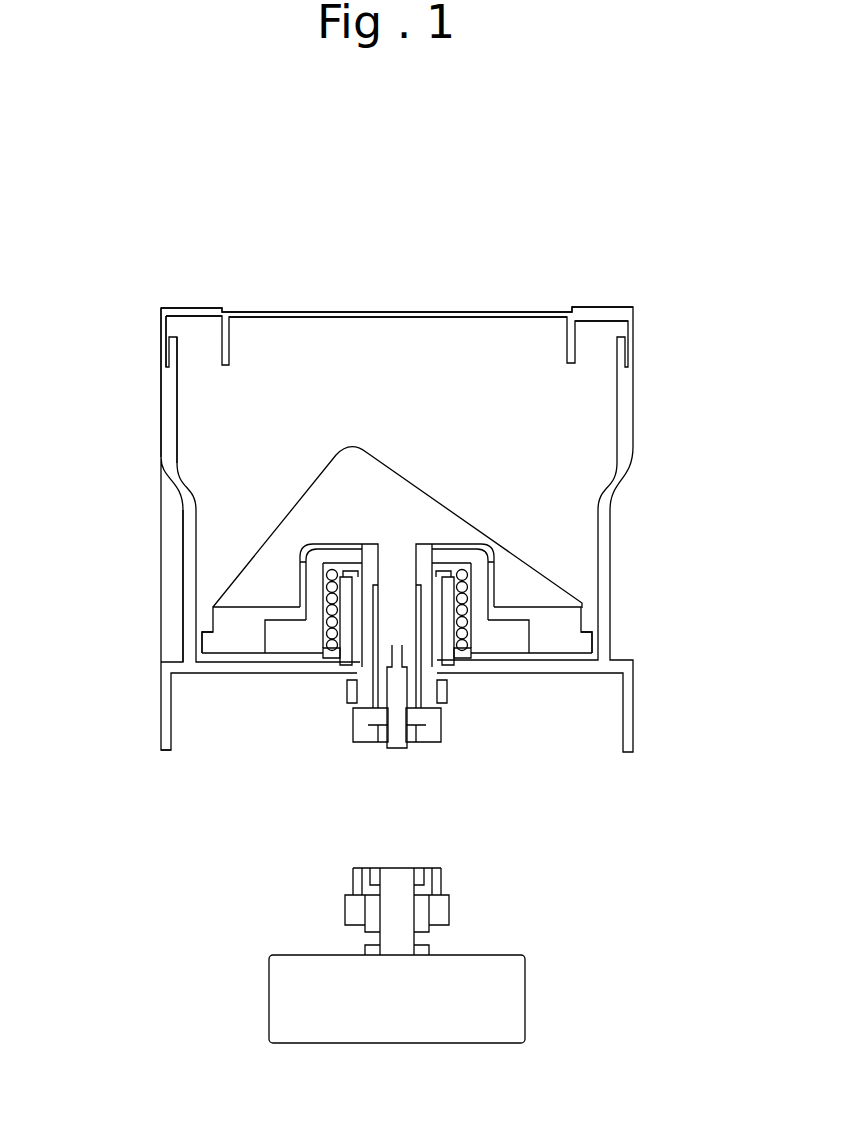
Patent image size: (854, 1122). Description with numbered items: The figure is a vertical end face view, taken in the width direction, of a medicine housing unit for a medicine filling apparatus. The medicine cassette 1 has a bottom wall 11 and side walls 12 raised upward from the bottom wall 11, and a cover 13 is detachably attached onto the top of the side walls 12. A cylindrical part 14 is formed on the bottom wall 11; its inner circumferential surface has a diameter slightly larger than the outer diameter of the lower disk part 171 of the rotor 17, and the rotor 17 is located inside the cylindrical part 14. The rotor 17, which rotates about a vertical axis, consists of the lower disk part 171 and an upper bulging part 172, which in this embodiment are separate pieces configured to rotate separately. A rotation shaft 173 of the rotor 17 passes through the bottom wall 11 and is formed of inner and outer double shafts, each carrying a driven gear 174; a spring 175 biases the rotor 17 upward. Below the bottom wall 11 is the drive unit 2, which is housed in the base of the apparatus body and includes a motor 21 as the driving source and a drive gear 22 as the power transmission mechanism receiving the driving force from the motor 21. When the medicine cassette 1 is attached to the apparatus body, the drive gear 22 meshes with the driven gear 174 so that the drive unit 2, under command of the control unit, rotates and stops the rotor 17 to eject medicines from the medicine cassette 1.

The medicine cassette 1 is at (152, 291).
The bottom wall 11 is at (240, 675).
The side walls 12 is at (167, 403).
The cover 13 is at (393, 308).
The cylindrical part 14 is at (190, 614).
The rotor 17 is at (267, 553).
The lower disk part 171 is at (205, 637).
The upper bulging part 172 is at (243, 584).
The rotation shaft 173 is at (363, 650).
The driven gear 174 is at (355, 725).
The spring 175 is at (318, 636).
The drive unit 2 is at (258, 920).
The motor 21 is at (283, 997).
The drive gear 22 is at (434, 881).